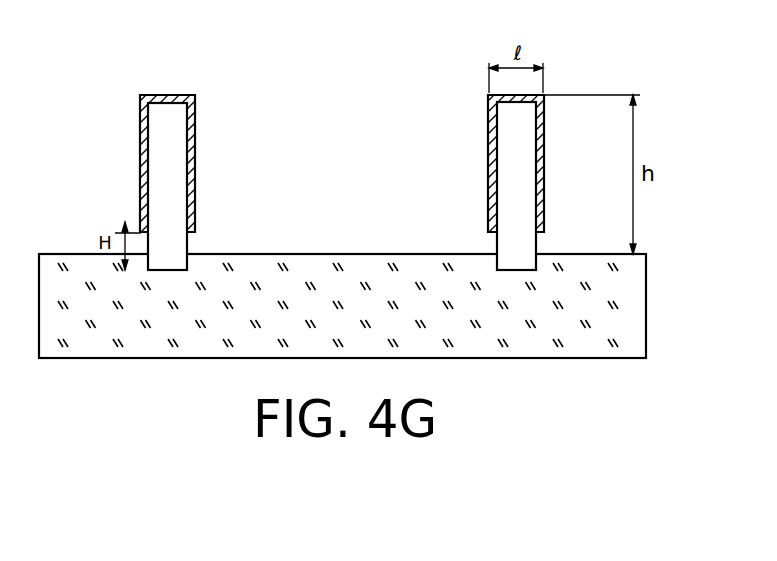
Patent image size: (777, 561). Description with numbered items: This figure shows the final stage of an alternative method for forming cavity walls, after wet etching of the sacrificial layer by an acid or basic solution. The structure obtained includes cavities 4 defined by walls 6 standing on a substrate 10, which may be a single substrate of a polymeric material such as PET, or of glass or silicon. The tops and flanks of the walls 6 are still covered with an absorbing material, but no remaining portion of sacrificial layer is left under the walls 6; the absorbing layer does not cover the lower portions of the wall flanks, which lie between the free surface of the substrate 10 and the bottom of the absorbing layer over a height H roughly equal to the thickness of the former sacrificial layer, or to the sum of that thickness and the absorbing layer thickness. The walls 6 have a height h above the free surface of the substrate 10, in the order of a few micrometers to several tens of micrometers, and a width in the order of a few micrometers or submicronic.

The cavity 4 is at (345, 189).
The wall 6 is at (172, 160).
The substrate 10 is at (635, 321).